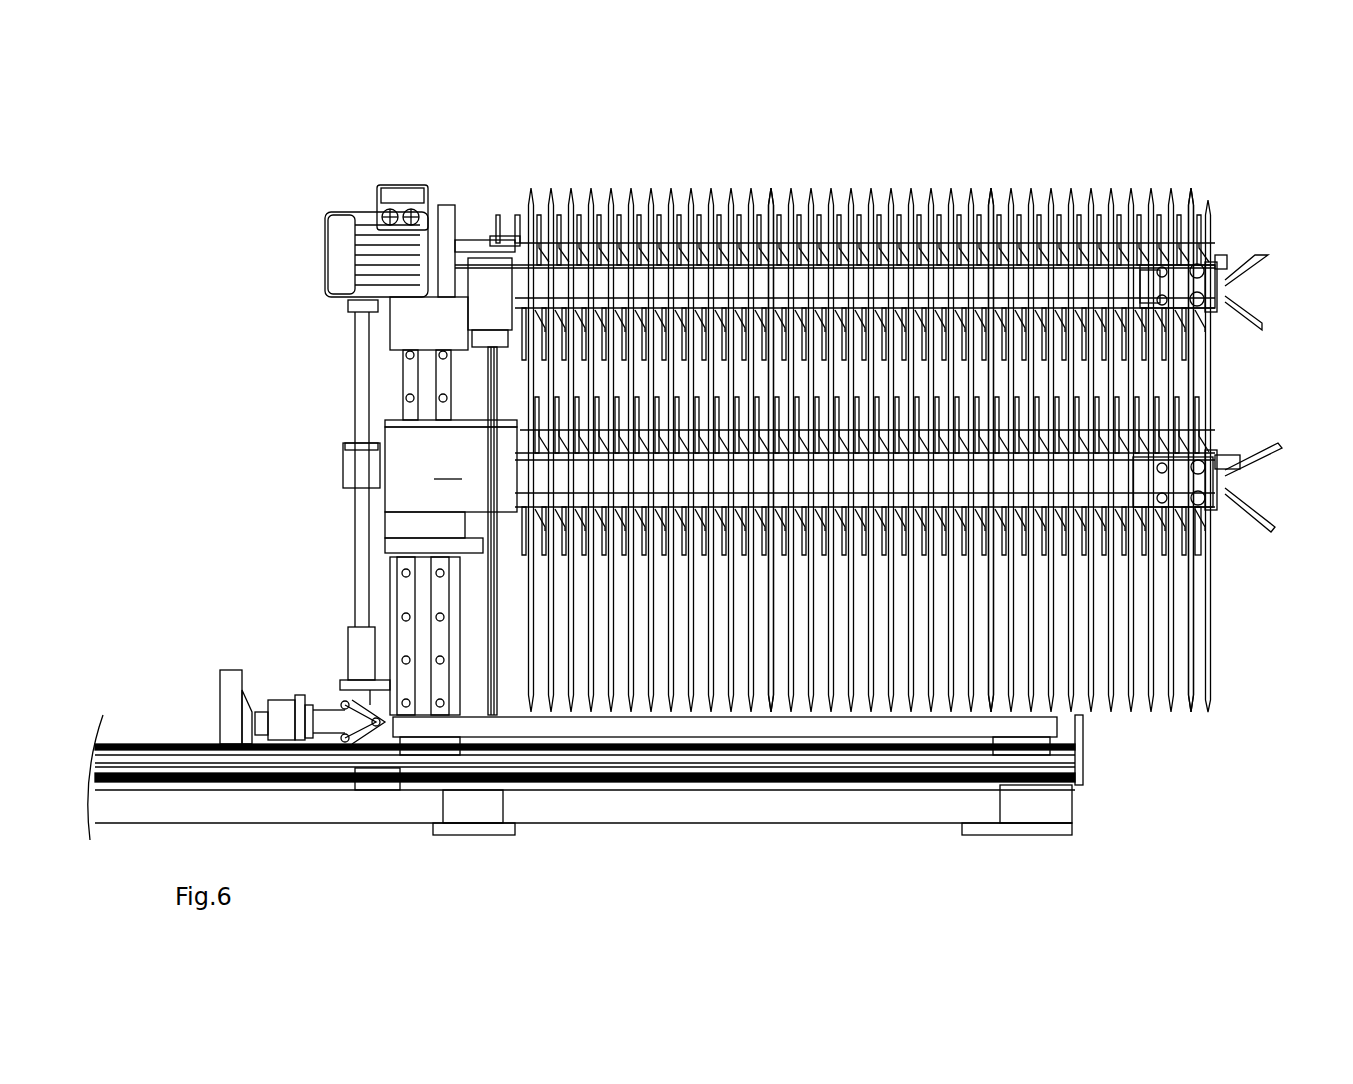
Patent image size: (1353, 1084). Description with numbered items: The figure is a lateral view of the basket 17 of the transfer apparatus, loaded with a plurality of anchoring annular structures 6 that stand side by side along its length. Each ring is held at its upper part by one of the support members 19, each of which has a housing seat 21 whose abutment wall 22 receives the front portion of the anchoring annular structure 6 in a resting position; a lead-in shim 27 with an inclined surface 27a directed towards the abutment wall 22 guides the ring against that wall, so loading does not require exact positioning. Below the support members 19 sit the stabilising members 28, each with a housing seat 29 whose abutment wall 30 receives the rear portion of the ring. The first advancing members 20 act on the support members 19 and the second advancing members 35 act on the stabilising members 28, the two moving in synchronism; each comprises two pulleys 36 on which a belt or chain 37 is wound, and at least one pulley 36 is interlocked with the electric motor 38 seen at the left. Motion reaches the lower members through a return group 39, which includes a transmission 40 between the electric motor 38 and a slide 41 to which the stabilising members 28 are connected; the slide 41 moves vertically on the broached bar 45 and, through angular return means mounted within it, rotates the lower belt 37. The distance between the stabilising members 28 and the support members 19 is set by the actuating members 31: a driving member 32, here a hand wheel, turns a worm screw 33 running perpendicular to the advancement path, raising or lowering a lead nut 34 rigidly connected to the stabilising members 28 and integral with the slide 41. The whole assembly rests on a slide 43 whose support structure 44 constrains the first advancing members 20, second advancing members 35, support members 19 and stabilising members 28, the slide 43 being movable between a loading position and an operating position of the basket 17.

The anchoring annular structures 6 is at (870, 185).
The basket 17 is at (285, 185).
The support members 19 is at (605, 185).
The first advancing members 20 is at (510, 190).
The housing seat 21 is at (762, 215).
The abutment wall 22 is at (708, 215).
The lead-in shim 27 is at (1078, 245).
The inclined surface 27a is at (1098, 245).
The stabilising members 28 is at (760, 610).
The housing seat 29 is at (1120, 565).
The abutment wall 30 is at (1210, 540).
The actuating members 31 is at (320, 665).
The driving member 32 is at (230, 715).
The worm screw 33 is at (362, 540).
The lead nut 34 is at (362, 468).
The second advancing members 35 is at (1240, 445).
The pulleys 36 is at (1215, 270).
The belt or chain 37 is at (975, 290).
The electric motor 38 is at (345, 262).
The return group 39 is at (468, 378).
The transmission 40 is at (445, 317).
The slide 41 is at (451, 486).
The slide 43 is at (672, 760).
The support structure 44 is at (580, 718).
The broached bar 45 is at (490, 605).